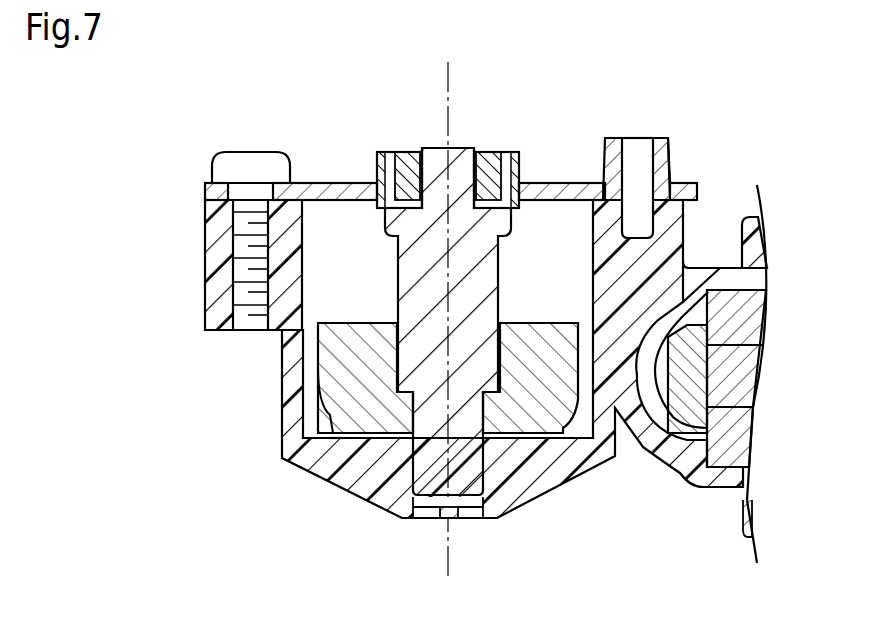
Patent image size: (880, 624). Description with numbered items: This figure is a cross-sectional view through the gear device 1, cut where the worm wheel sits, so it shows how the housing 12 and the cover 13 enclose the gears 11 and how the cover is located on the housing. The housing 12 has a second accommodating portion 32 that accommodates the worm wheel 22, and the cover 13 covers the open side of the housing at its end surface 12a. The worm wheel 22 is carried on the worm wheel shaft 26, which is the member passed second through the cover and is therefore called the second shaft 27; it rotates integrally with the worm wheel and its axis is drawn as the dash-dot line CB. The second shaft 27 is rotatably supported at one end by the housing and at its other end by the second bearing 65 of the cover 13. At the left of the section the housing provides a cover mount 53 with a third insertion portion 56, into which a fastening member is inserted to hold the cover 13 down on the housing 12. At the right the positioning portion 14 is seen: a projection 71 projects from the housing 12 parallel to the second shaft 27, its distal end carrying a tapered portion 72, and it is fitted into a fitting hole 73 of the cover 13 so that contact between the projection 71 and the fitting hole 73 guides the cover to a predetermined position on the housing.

The gear device 1 is at (707, 112).
The gears 11 is at (328, 374).
The housing 12 is at (372, 509).
The end surface 12a is at (213, 184).
The cover 13 is at (335, 183).
The positioning portion 14 is at (657, 130).
The worm wheel 22 is at (379, 378).
The worm wheel shaft 26 is at (409, 321).
The second shaft 27 is at (412, 270).
The second accommodating portion 32 is at (337, 452).
The cover mount 53 is at (205, 263).
The third insertion portion 56 is at (195, 265).
The second bearing 65 is at (380, 153).
The projection 71 is at (614, 140).
The tapered portion 72 is at (670, 149).
The fitting hole 73 is at (620, 188).
The center axis CB is at (448, 85).